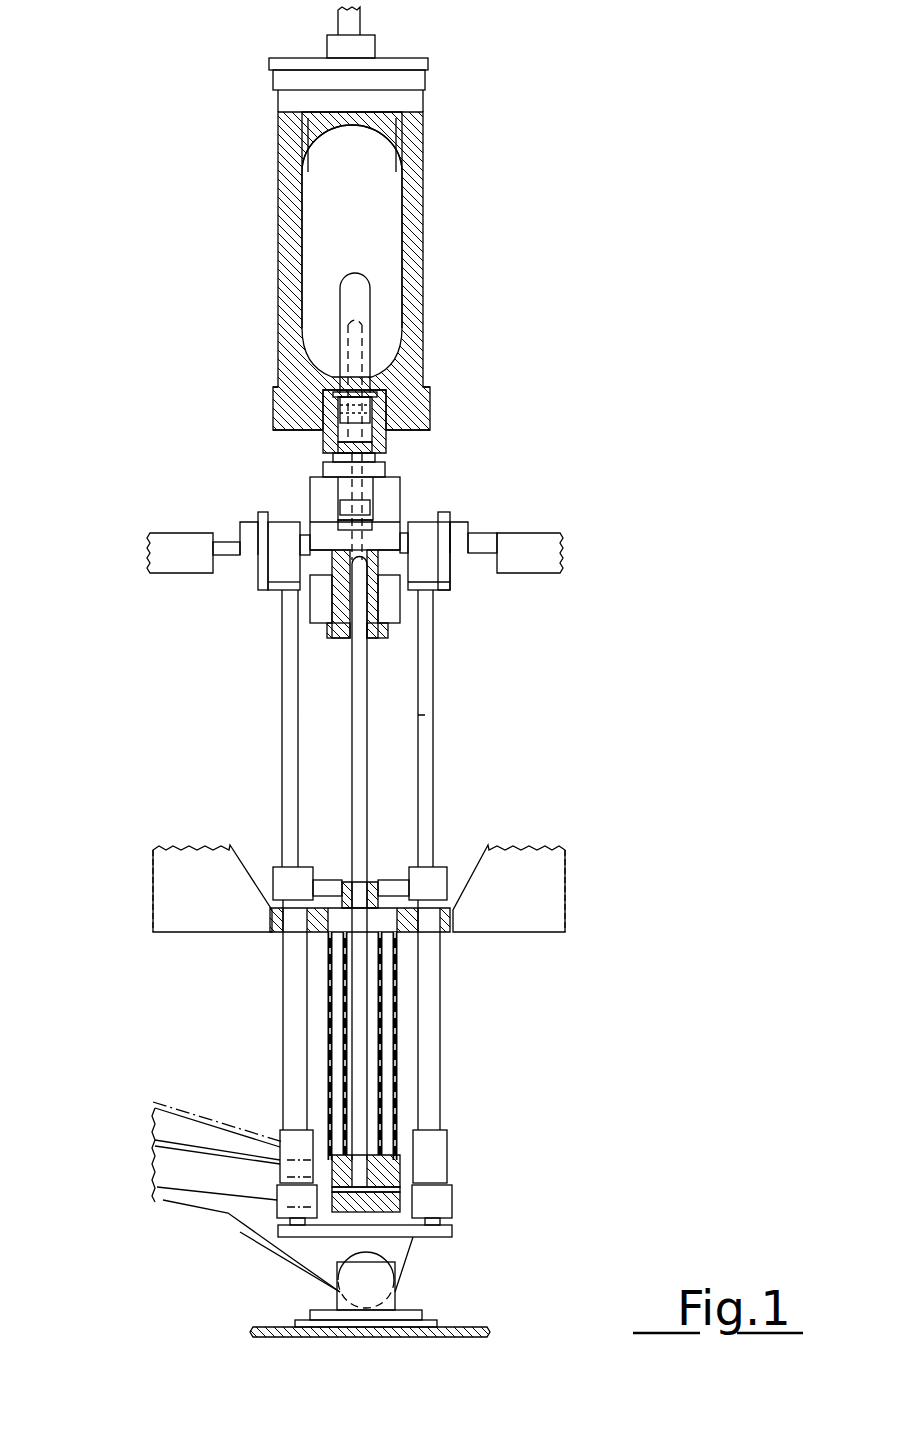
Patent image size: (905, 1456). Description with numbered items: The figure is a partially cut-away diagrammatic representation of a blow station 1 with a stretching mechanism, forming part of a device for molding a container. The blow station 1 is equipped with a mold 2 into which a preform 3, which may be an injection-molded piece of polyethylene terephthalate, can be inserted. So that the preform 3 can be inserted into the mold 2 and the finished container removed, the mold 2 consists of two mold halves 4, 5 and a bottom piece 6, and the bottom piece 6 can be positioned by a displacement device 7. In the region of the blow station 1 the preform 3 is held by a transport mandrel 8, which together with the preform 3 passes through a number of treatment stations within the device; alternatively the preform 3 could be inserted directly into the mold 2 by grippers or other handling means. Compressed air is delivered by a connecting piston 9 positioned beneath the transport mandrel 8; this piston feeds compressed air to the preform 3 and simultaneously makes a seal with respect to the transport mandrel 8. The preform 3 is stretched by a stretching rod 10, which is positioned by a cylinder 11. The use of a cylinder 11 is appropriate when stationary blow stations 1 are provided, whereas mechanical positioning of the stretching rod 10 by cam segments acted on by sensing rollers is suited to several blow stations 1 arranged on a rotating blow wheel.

The blow station 1 is at (425, 163).
The mold 2 is at (420, 330).
The preform 3 is at (357, 273).
The mold half 4 is at (410, 202).
The mold half 5 is at (287, 207).
The bottom piece 6 is at (287, 127).
The displacement device 7 is at (377, 45).
The transport mandrel 8 is at (340, 422).
The connecting piston 9 is at (387, 497).
The stretching rod 10 is at (357, 563).
The cylinder 11 is at (343, 1030).